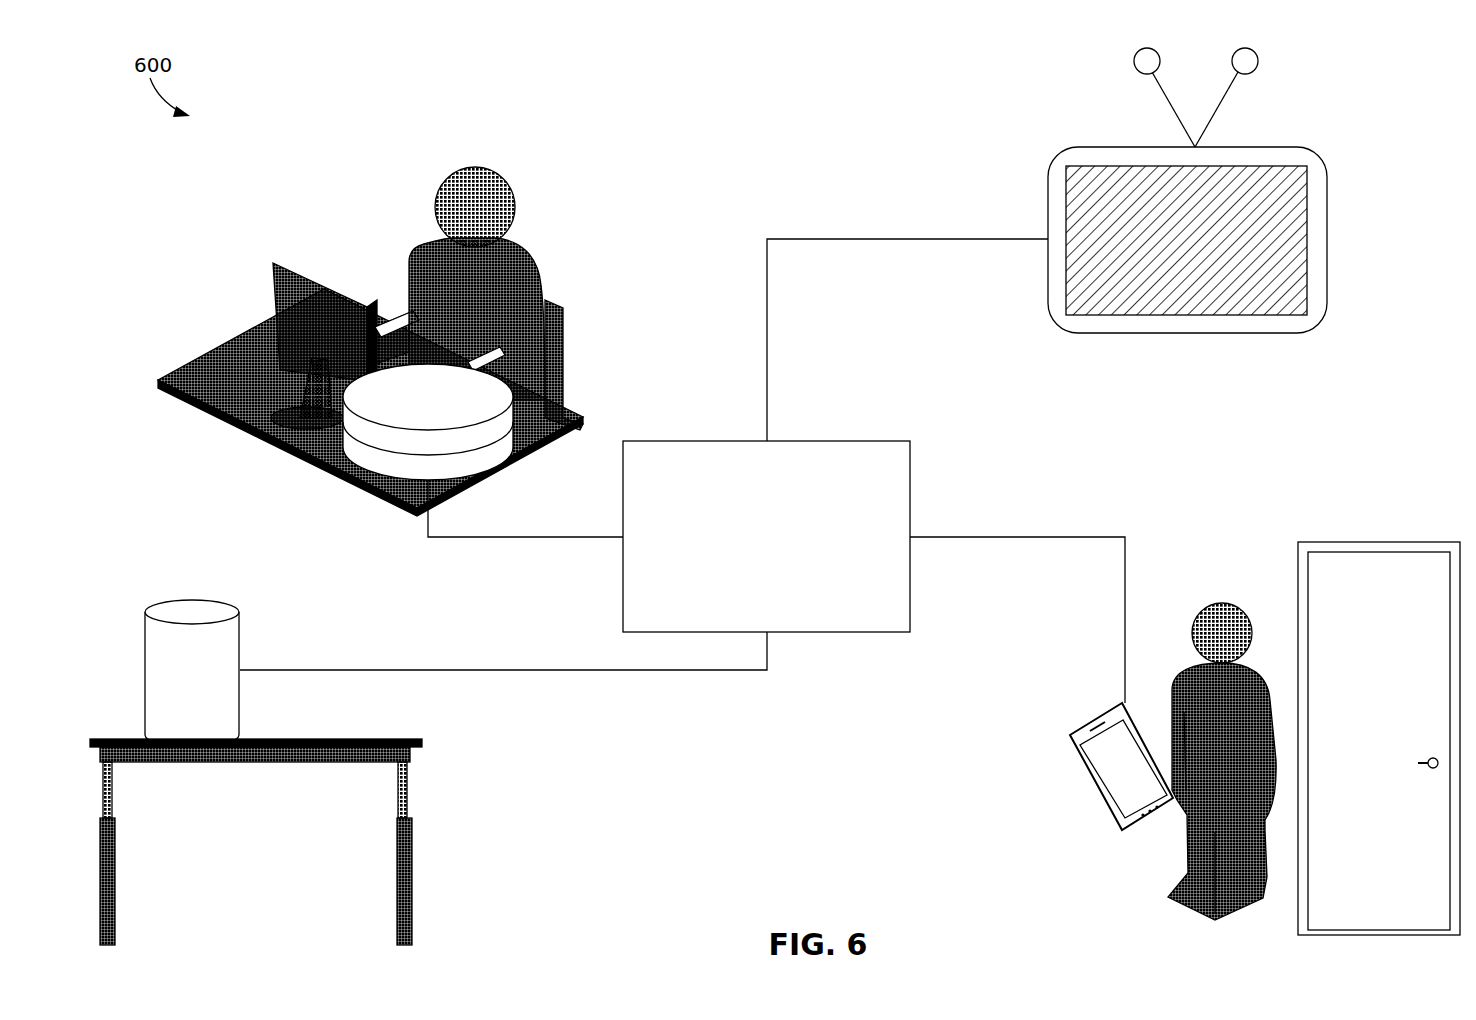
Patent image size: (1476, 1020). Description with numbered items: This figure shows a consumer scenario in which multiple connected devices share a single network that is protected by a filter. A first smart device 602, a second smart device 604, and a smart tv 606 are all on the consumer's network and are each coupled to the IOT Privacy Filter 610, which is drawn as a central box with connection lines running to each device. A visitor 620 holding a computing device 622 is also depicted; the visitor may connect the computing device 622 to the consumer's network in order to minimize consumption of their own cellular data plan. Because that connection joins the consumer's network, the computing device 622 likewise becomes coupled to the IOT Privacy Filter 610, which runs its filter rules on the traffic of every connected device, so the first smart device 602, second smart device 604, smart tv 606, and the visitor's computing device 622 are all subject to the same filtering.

The first smart device 602 is at (239, 641).
The second smart device 604 is at (409, 406).
The smart tv 606 is at (1327, 225).
The IOT Privacy Filter 610 is at (748, 495).
The visitor 620 is at (1177, 670).
The computing device 622 is at (1103, 797).